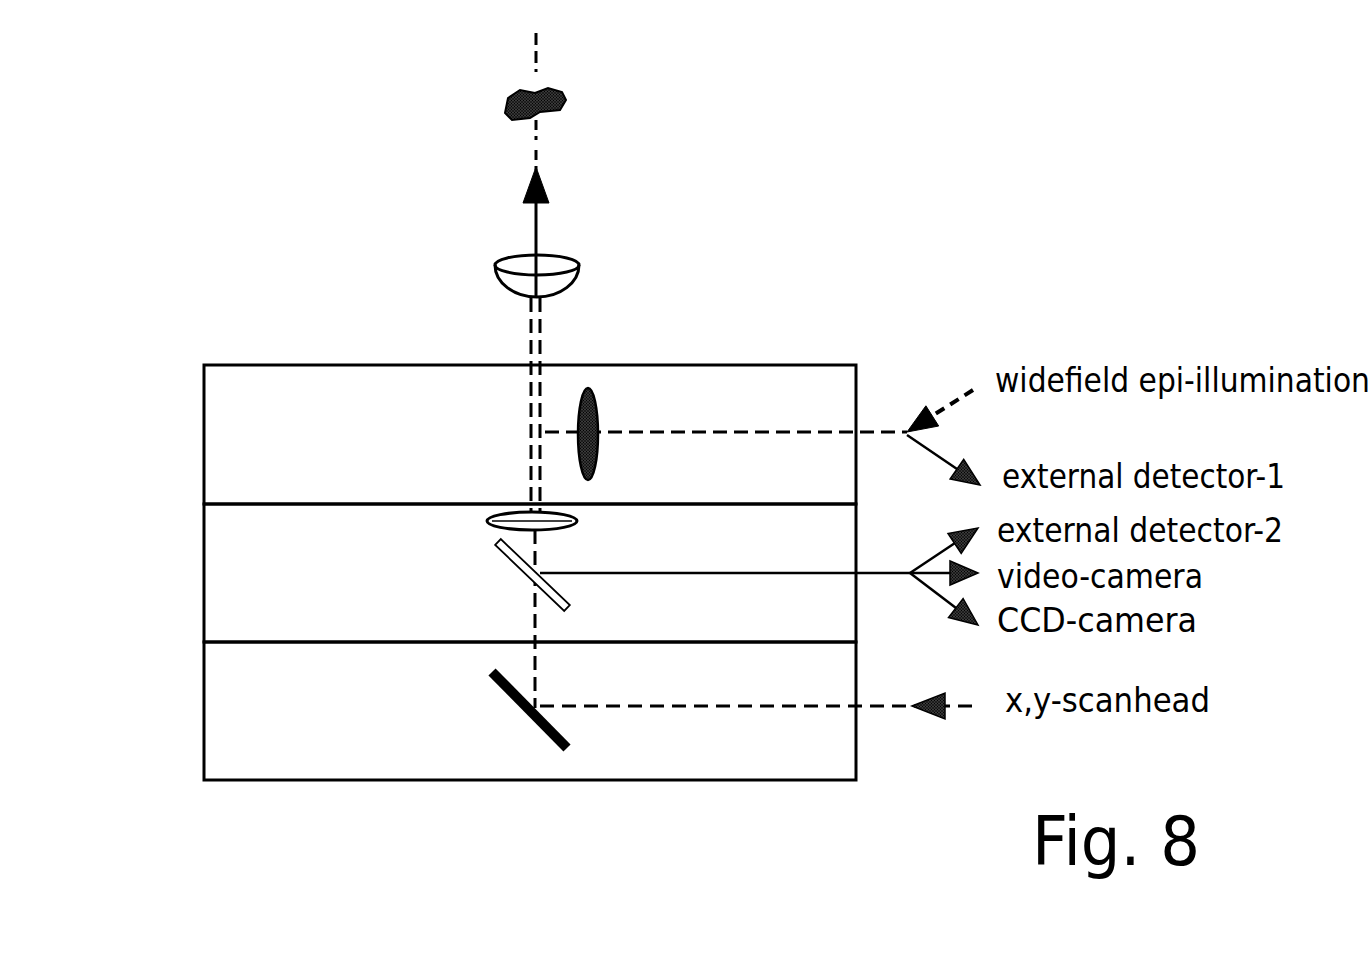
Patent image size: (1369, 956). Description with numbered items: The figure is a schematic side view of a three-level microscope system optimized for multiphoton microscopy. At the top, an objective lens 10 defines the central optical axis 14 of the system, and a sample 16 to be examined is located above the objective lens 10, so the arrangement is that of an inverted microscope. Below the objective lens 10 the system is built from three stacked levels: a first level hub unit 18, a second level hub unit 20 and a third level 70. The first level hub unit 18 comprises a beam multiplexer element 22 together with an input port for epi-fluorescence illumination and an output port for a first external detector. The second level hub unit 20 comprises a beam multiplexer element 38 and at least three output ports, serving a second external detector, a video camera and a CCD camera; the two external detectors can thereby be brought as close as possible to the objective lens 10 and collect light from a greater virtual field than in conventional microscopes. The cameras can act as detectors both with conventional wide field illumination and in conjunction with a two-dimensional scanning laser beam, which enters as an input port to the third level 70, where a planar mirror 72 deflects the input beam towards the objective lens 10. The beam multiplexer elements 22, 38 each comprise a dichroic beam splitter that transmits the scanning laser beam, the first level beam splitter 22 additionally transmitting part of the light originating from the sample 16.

The objective lens 10 is at (580, 267).
The central optical axis 14 is at (536, 61).
The sample 16 is at (566, 100).
The first level hub unit 18 is at (248, 435).
The second level hub unit 20 is at (250, 580).
The beam multiplexer element 22 is at (530, 432).
The beam multiplexer element 38 is at (535, 577).
The third level 70 is at (248, 705).
The planar mirror 72 is at (527, 710).